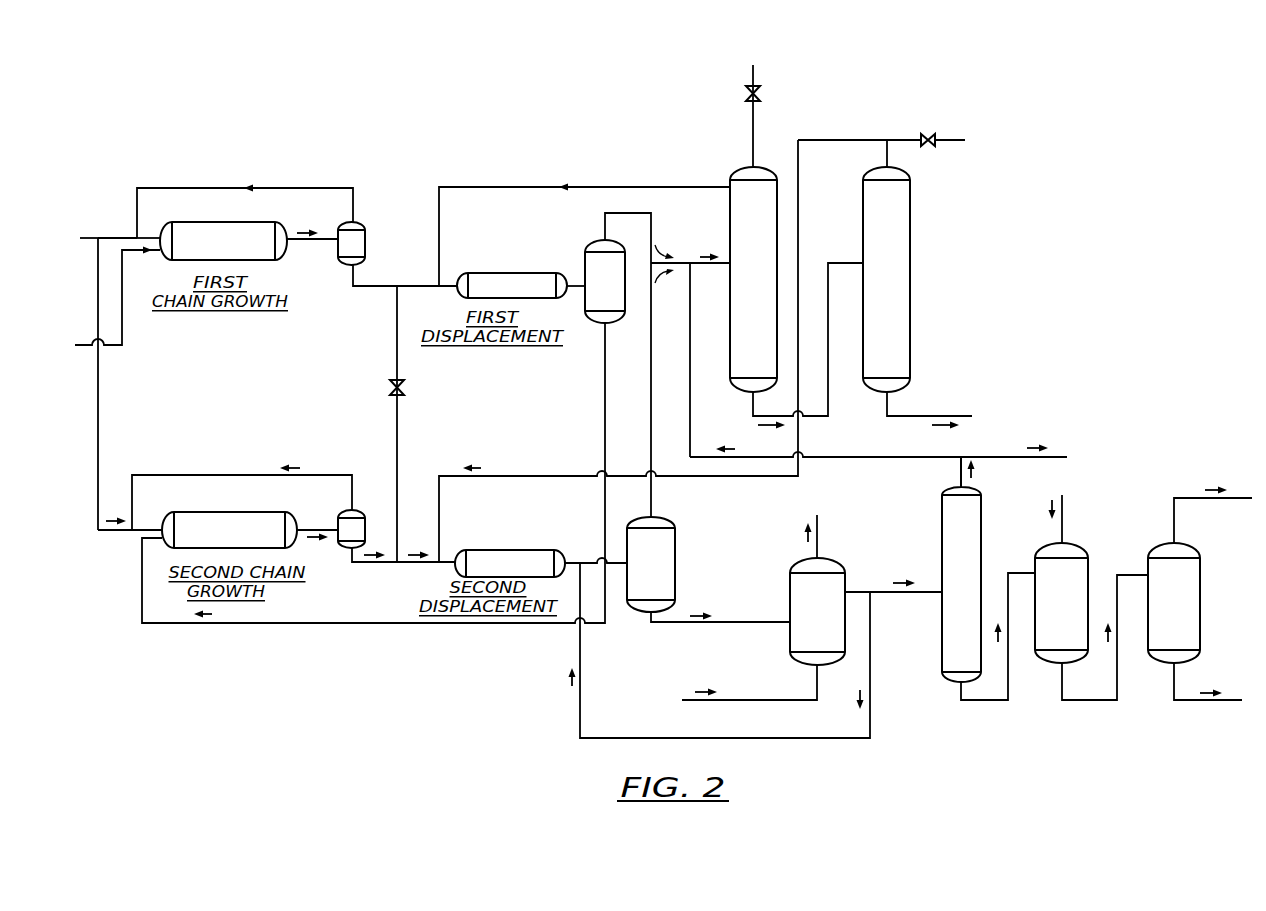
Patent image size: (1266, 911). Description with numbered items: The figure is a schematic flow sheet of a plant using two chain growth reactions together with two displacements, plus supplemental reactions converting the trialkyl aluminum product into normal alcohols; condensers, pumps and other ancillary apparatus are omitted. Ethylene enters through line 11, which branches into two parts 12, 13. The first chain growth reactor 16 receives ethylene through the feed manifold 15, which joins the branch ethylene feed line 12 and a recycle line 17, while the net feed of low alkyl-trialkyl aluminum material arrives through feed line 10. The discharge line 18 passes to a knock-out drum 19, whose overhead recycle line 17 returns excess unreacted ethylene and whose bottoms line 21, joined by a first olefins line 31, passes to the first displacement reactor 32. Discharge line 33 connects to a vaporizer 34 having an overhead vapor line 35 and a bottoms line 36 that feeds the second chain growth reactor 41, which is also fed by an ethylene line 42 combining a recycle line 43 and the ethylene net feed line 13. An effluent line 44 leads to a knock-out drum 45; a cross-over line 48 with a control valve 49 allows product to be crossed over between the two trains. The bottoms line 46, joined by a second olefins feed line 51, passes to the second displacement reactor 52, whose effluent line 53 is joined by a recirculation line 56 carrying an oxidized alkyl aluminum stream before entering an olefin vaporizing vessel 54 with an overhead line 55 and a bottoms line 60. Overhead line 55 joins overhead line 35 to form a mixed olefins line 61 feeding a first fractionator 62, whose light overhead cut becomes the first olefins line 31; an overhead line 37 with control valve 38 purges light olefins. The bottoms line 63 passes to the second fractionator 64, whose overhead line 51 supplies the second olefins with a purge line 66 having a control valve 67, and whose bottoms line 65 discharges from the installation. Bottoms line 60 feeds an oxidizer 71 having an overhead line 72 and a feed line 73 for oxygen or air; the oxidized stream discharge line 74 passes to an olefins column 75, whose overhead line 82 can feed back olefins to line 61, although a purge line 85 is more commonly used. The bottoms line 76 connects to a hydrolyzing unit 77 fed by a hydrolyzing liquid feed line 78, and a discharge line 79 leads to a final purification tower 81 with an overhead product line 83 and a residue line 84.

The feed line 10 is at (87, 346).
The ethylene supply line 11 is at (90, 237).
The branch ethylene feed line 12 is at (118, 237).
The ethylene net feed line 13 is at (103, 420).
The feed manifold 15 is at (148, 237).
The first chain growth reactor 16 is at (223, 241).
The recycle line 17 is at (165, 188).
The discharge line 18 is at (305, 241).
The knock-out drum 19 is at (351, 243).
The bottoms line 21 is at (358, 274).
The first olefins line 31 is at (441, 236).
The first displacement reactor 32 is at (512, 285).
The discharge line 33 is at (580, 288).
The vaporizer 34 is at (605, 281).
The overhead vapor line 35 is at (604, 227).
The bottoms line 36 is at (604, 395).
The overhead line 37 is at (754, 125).
The control valve 38 is at (760, 93).
The second chain growth reactor 41 is at (229, 530).
The ethylene line 42 is at (138, 530).
The recycle line 43 is at (172, 475).
The effluent line 44 is at (304, 528).
The knock-out drum 45 is at (351, 529).
The bottoms line 46 is at (364, 563).
The cross-over line 48 is at (400, 421).
The control valve 49 is at (405, 386).
The second olefins feed line 51 is at (843, 140).
The second displacement reactor 52 is at (510, 563).
The effluent line 53 is at (590, 560).
The olefin vaporizing vessel 54 is at (651, 564).
The overhead line 55 is at (650, 424).
The recirculation line 56 is at (583, 680).
The bottoms line 60 is at (730, 622).
The mixed olefins line 61 is at (705, 268).
The first fractionator 62 is at (753, 279).
The bottoms line 63 is at (829, 362).
The second fractionator 64 is at (886, 279).
The bottoms line 65 is at (924, 416).
The purge line 66 is at (904, 140).
The control valve 67 is at (931, 148).
The oxidizer 71 is at (817, 611).
The overhead line 72 is at (820, 530).
The feed line 73 is at (745, 700).
The oxidized stream discharge line 74 is at (887, 593).
The olefins column 75 is at (961, 569).
The bottoms line 76 is at (973, 700).
The hydrolyzing unit 77 is at (1061, 603).
The hydrolyzing liquid feed line 78 is at (1066, 516).
The discharge line 79 is at (1070, 700).
The final purification tower 81 is at (1174, 603).
The overhead line 82 is at (936, 456).
The overhead product line 83 is at (1181, 499).
The residue line 84 is at (1183, 700).
The purge line 85 is at (1010, 457).